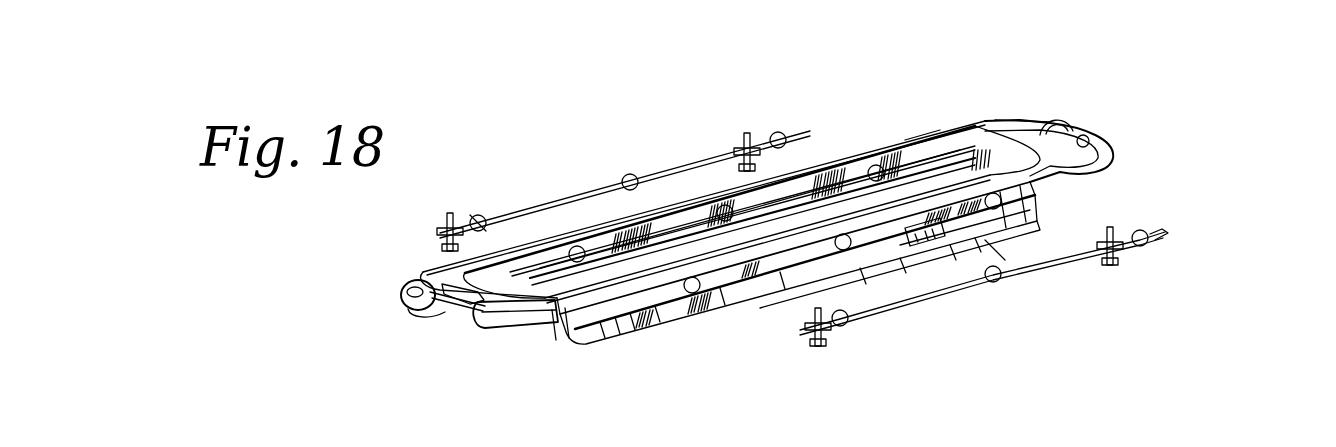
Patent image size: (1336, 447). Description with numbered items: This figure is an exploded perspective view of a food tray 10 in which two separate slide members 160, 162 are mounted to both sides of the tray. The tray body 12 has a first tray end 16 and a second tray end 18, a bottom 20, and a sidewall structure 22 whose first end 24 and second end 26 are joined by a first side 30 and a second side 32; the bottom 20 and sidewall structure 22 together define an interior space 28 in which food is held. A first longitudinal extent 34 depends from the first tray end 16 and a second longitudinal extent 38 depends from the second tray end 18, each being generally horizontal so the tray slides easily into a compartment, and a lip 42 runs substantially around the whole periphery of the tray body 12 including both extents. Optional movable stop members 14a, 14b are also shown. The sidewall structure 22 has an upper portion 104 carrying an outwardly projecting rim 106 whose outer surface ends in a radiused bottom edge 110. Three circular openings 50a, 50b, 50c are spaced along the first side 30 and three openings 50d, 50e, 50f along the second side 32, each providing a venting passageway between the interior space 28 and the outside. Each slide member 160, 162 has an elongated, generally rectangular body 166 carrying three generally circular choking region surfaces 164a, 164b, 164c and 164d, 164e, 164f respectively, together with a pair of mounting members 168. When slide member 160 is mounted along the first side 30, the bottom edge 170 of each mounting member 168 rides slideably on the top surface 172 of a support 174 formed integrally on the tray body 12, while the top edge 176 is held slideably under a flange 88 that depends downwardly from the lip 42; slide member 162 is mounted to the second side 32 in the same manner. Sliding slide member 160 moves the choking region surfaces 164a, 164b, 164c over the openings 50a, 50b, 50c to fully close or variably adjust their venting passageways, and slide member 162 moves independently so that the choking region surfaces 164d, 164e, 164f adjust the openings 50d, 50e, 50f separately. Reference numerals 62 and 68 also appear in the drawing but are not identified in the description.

The food tray 10 is at (948, 55).
The tray body 12 is at (707, 317).
The movable stop member 14a is at (437, 306).
The movable stop member 14b is at (1062, 124).
The first tray end 16 is at (460, 305).
The second tray end 18 is at (1088, 137).
The bottom 20 is at (590, 337).
The sidewall structure 22 is at (512, 317).
The first end 24 is at (548, 343).
The second end 26 is at (1168, 235).
The interior space 28 is at (916, 150).
The first side 30 is at (567, 343).
The second side 32 is at (898, 150).
The first longitudinal extent 34 is at (405, 290).
The second longitudinal extent 38 is at (982, 128).
The lip 42 is at (440, 266).
The opening 50a is at (700, 290).
The opening 50b is at (875, 262).
The opening 50c is at (1000, 210).
The opening 50d is at (568, 247).
The opening 50e is at (723, 205).
The opening 50f is at (874, 165).
The end loop 62 is at (1043, 170).
The coupling 68 is at (476, 213).
The flange 88 is at (620, 300).
The upper portion 104 is at (633, 297).
The outwardly projecting rim 106 is at (657, 325).
The radiused bottom edge 110 is at (1035, 210).
The slide member 160 is at (885, 305).
The slide member 162 is at (655, 170).
The choking region surface 164a is at (847, 327).
The choking region surface 164b is at (1003, 282).
The choking region surface 164c is at (1148, 250).
The choking region surface 164d is at (470, 215).
The choking region surface 164e is at (628, 175).
The choking region surface 164f is at (780, 133).
The body 166 is at (588, 262).
The mounting member 168 is at (442, 247).
The bottom edge 170 is at (758, 152).
The top surface 172 is at (983, 230).
The support 174 is at (683, 307).
The top edge 176 is at (446, 218).